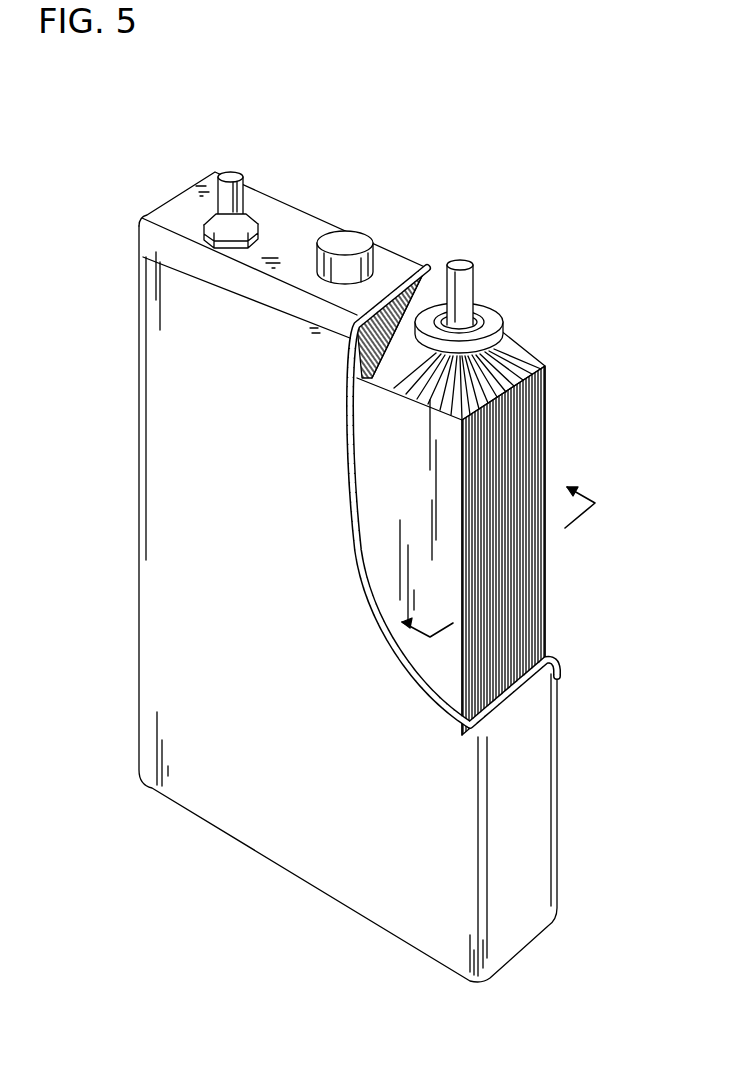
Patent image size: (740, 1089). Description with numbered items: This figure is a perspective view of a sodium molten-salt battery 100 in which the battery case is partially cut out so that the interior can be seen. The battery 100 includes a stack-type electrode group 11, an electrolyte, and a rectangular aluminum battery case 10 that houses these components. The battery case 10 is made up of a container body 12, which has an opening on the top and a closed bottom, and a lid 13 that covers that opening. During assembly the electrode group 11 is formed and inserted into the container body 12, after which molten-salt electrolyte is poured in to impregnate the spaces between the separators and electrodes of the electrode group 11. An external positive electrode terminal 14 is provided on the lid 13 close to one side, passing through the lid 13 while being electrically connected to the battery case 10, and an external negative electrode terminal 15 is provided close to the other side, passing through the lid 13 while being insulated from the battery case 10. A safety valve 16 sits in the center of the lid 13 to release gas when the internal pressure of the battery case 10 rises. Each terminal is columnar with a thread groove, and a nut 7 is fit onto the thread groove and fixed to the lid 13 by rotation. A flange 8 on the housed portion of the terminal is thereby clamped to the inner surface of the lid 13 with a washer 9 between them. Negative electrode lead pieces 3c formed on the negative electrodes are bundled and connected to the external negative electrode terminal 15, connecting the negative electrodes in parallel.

The molten-salt battery 100 is at (523, 105).
The nut 7 is at (215, 221).
The flange 8 is at (485, 307).
The washer 9 is at (443, 313).
The battery case 10 is at (330, 127).
The electrode group 11 is at (520, 437).
The container body 12 is at (262, 432).
The lid 13 is at (286, 218).
The external positive electrode terminal 14 is at (227, 177).
The external negative electrode terminal 15 is at (459, 262).
The safety valve 16 is at (355, 240).
The negative electrode lead piece 3c is at (523, 347).